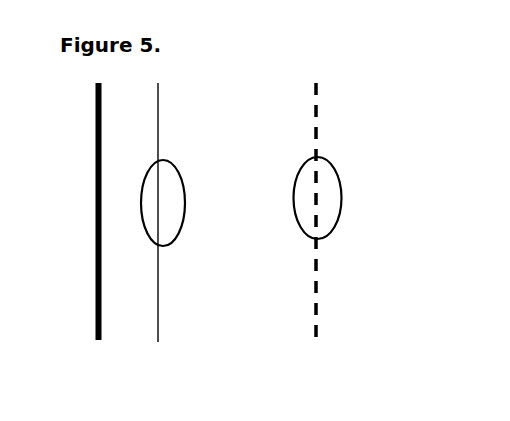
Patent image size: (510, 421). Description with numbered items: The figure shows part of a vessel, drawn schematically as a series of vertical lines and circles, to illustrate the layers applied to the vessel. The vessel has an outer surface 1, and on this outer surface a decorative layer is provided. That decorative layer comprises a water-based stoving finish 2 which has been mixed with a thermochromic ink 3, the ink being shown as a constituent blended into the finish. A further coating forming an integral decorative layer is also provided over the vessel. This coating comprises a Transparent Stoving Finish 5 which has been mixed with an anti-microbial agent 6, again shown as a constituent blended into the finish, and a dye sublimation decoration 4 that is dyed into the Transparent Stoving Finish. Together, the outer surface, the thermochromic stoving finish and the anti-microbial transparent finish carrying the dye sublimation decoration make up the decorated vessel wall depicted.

The outer surface 1 is at (82, 317).
The water-based stoving finish 2 is at (163, 318).
The thermochromic ink 3 is at (165, 198).
The dye sublimation decoration 4 is at (293, 318).
The Transparent Stoving Finish 5 is at (323, 318).
The anti-microbial agent 6 is at (322, 197).